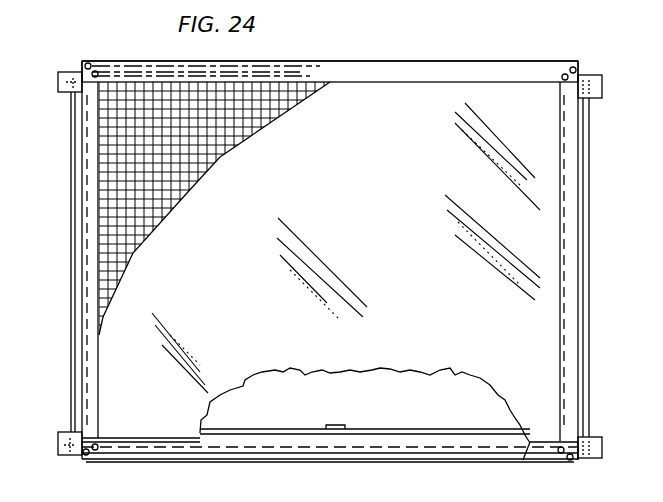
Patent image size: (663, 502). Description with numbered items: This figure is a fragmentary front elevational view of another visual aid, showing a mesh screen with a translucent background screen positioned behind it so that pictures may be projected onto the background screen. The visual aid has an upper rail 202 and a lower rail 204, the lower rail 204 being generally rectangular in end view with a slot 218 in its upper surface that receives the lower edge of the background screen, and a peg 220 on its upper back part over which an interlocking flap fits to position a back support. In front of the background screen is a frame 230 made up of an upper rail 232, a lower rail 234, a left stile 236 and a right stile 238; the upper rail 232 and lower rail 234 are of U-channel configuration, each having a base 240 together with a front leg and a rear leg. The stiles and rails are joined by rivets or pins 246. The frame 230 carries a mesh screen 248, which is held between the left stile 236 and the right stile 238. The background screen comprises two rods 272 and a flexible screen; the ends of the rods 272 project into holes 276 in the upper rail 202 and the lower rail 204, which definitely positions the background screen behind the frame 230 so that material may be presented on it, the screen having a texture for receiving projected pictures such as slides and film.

The upper rail 202 is at (597, 78).
The lower rail 204 is at (58, 437).
The slot 218 is at (602, 446).
The peg 220 is at (330, 427).
The frame 230 is at (322, 60).
The upper rail 232 is at (433, 64).
The lower rail 234 is at (167, 454).
The left stile 236 is at (99, 333).
The right stile 238 is at (562, 112).
The base 240 is at (369, 475).
The rivets or pins 246 is at (86, 76).
The mesh screen 248 is at (247, 133).
The rods 272 is at (72, 219).
The holes 276 is at (63, 92).